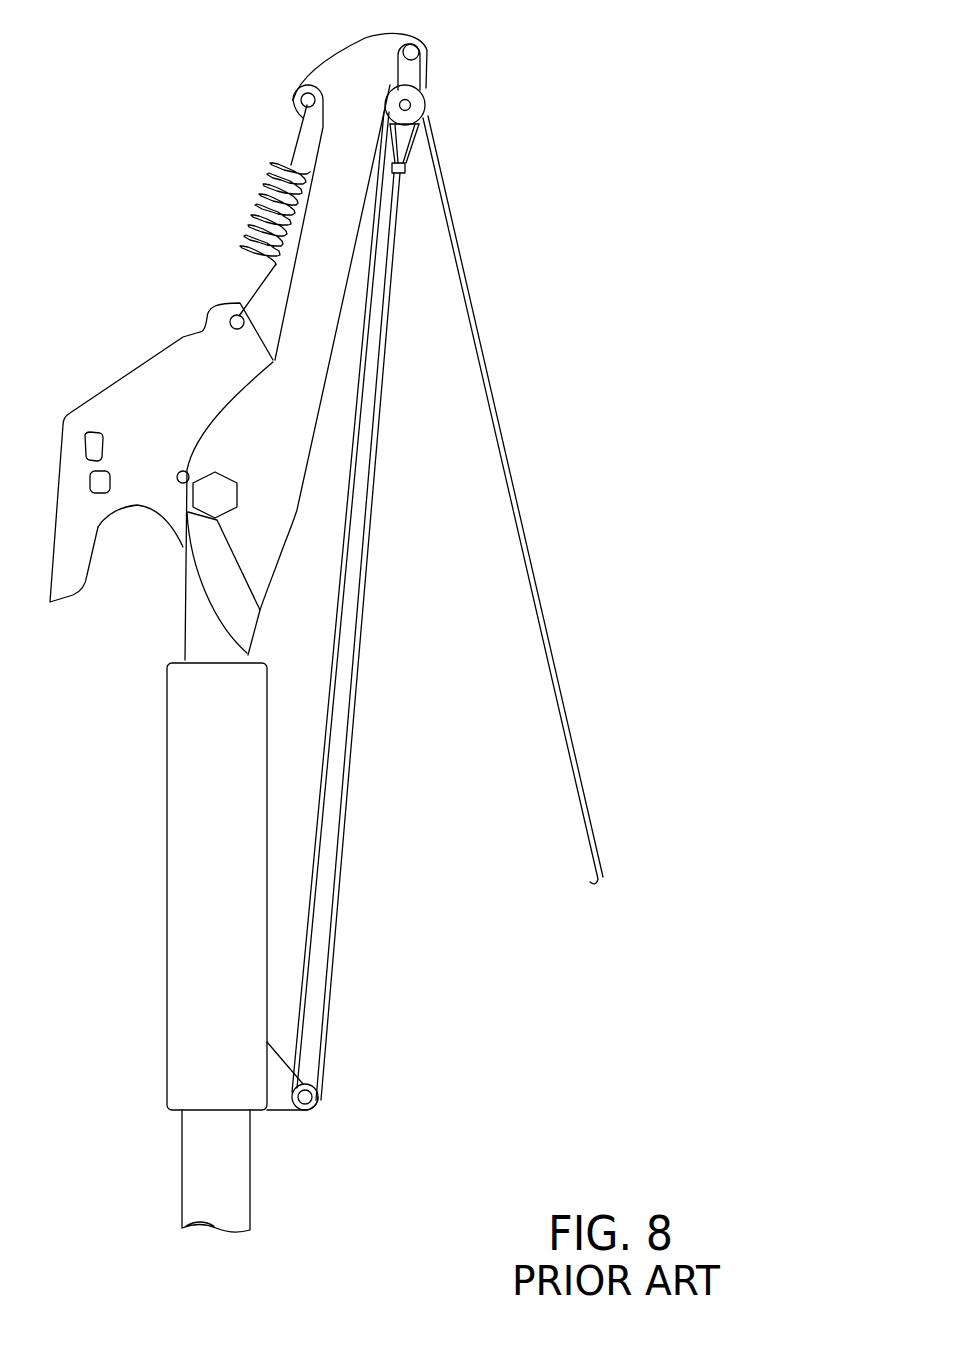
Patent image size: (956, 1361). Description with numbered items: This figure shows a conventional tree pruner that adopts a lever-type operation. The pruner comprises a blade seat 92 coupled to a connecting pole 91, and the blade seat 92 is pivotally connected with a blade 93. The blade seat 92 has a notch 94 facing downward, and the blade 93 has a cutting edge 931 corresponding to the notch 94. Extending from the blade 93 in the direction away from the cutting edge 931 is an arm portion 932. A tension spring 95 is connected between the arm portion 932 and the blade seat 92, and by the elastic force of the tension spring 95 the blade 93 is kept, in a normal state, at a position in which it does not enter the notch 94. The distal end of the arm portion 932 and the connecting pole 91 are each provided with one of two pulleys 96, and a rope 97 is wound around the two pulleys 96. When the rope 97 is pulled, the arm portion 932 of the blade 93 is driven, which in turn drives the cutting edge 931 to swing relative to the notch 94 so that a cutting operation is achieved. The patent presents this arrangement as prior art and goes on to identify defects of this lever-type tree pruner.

The connecting pole 91 is at (190, 905).
The blade seat 92 is at (128, 390).
The blade 93 is at (295, 405).
The cutting edge 931 is at (230, 612).
The arm portion 932 is at (345, 206).
The notch 94 is at (128, 593).
The tension spring 95 is at (257, 200).
The pulleys 96 is at (418, 104).
The rope 97 is at (470, 300).